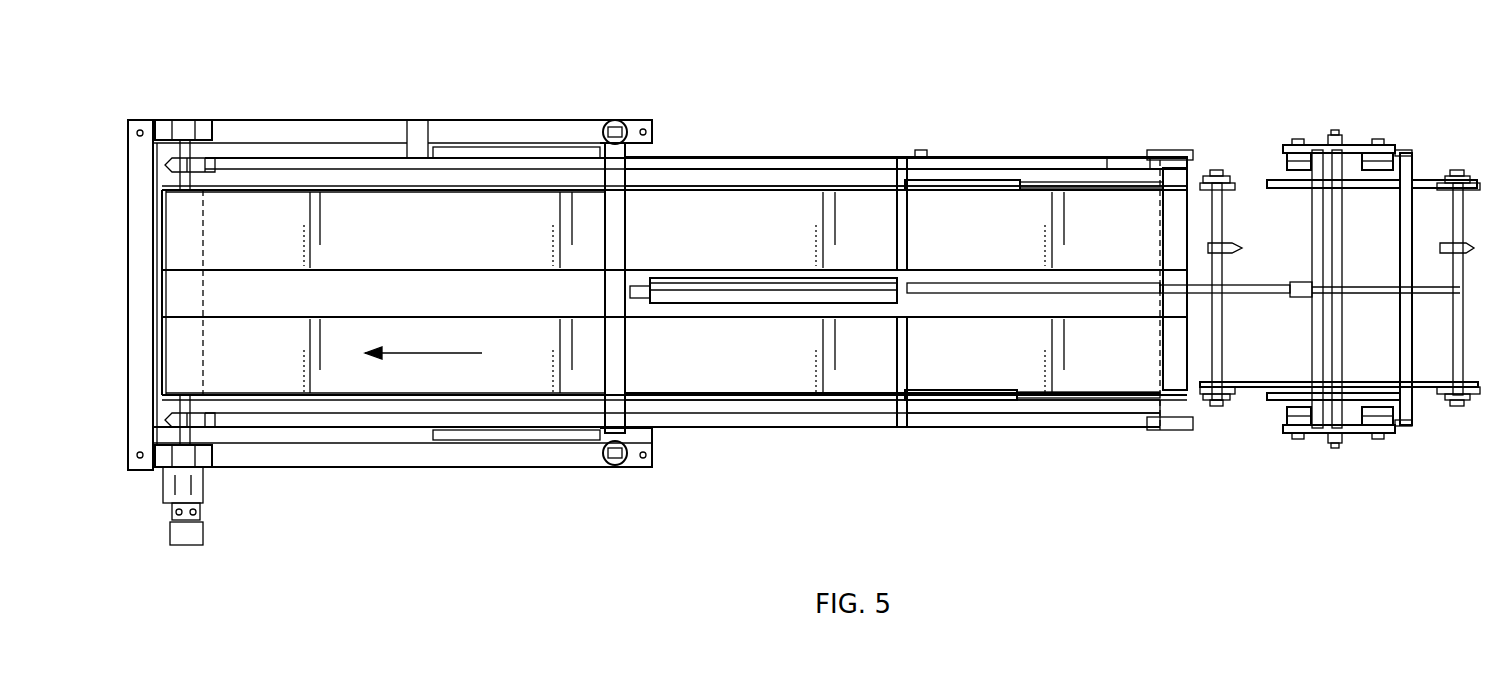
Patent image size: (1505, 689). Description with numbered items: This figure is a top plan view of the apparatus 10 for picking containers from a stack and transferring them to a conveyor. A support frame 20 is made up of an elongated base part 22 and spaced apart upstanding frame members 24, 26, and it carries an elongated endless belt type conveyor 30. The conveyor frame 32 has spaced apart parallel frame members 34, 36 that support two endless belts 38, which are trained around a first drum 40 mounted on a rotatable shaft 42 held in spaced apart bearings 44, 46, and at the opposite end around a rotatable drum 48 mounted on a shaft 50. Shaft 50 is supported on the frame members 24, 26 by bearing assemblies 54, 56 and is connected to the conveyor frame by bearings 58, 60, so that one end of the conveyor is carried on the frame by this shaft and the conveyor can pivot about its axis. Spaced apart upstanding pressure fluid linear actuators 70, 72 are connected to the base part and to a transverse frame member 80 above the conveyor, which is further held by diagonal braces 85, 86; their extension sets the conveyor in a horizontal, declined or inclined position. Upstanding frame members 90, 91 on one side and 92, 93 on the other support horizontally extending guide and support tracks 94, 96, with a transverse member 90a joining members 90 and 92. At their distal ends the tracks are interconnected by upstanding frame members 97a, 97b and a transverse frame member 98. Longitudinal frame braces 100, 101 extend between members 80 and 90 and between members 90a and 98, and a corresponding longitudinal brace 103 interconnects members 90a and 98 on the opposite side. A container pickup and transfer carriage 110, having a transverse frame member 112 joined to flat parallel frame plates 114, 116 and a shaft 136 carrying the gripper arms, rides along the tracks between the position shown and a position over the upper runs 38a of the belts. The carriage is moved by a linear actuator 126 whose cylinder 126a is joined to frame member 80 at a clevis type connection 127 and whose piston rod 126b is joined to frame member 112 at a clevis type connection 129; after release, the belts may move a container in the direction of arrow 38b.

The apparatus 10 is at (782, 80).
The support frame 20 is at (345, 118).
The elongated base part 22 is at (490, 120).
The upstanding frame member 24 is at (315, 467).
The upstanding frame member 26 is at (295, 120).
The endless belt type conveyor 30 is at (842, 155).
The conveyor frame 32 is at (705, 157).
The frame member 34 is at (790, 427).
The frame member 36 is at (768, 157).
The endless belts 38 is at (978, 229).
The upper runs 38a is at (455, 275).
The arrow 38b is at (435, 355).
The first drum 40 is at (1222, 262).
The rotatable shaft 42 is at (1107, 157).
The bearing 44 is at (1160, 430).
The bearing 46 is at (1165, 152).
The rotatable drum 48 is at (205, 300).
The shaft 50 is at (185, 182).
The bearing assembly 54 is at (212, 462).
The bearing assembly 56 is at (205, 128).
The bearing 58 is at (170, 405).
The bearing 60 is at (170, 122).
The linear actuator 70 is at (605, 462).
The linear actuator 72 is at (612, 120).
The transverse frame member 80 is at (625, 218).
The diagonal brace 85 is at (485, 455).
The diagonal brace 86 is at (530, 150).
The upstanding frame member 90 is at (903, 430).
The transverse member 90a is at (897, 205).
The upstanding frame member 91 is at (1145, 430).
The upstanding frame member 92 is at (898, 157).
The upstanding frame member 93 is at (1140, 157).
The guide and support track 94 is at (1000, 428).
The guide and support track 96 is at (1000, 157).
The upstanding frame member 97a is at (1410, 428).
The upstanding frame member 97b is at (1405, 150).
The transverse frame member 98 is at (1400, 300).
The longitudinal frame brace 100 is at (690, 430).
The longitudinal frame brace 101 is at (995, 388).
The longitudinal brace 103 is at (1000, 192).
The container pickup and transfer carriage 110 is at (1462, 178).
The transverse frame member 112 is at (1318, 258).
The frame plate 114 is at (1350, 438).
The frame plate 116 is at (1318, 148).
The linear actuator 126 is at (725, 305).
The cylinder 126a is at (695, 278).
The piston rod 126b is at (1085, 283).
The clevis type connection 127 is at (645, 310).
The clevis type connection 129 is at (1300, 297).
The shaft 136 is at (1345, 335).